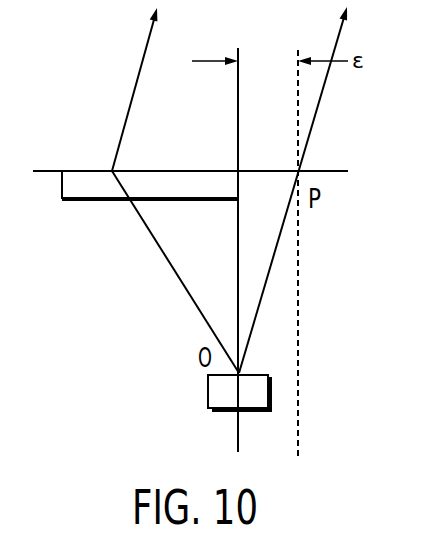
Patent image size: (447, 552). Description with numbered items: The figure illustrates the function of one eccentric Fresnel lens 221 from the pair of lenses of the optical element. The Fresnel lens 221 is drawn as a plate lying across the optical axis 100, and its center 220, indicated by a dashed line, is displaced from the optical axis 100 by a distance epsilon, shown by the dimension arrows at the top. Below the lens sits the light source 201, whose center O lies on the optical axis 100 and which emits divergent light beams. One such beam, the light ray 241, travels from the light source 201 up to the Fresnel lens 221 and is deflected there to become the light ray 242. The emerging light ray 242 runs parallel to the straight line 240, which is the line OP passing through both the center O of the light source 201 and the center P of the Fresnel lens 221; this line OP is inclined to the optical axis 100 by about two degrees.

The optical axis 100 is at (237, 118).
The center of the Fresnel lens 220 is at (297, 117).
The Fresnel lens 221 is at (83, 170).
The light ray 242 is at (138, 73).
The light ray 241 is at (165, 258).
The straight line OP 240 is at (255, 318).
The light source 201 is at (208, 389).